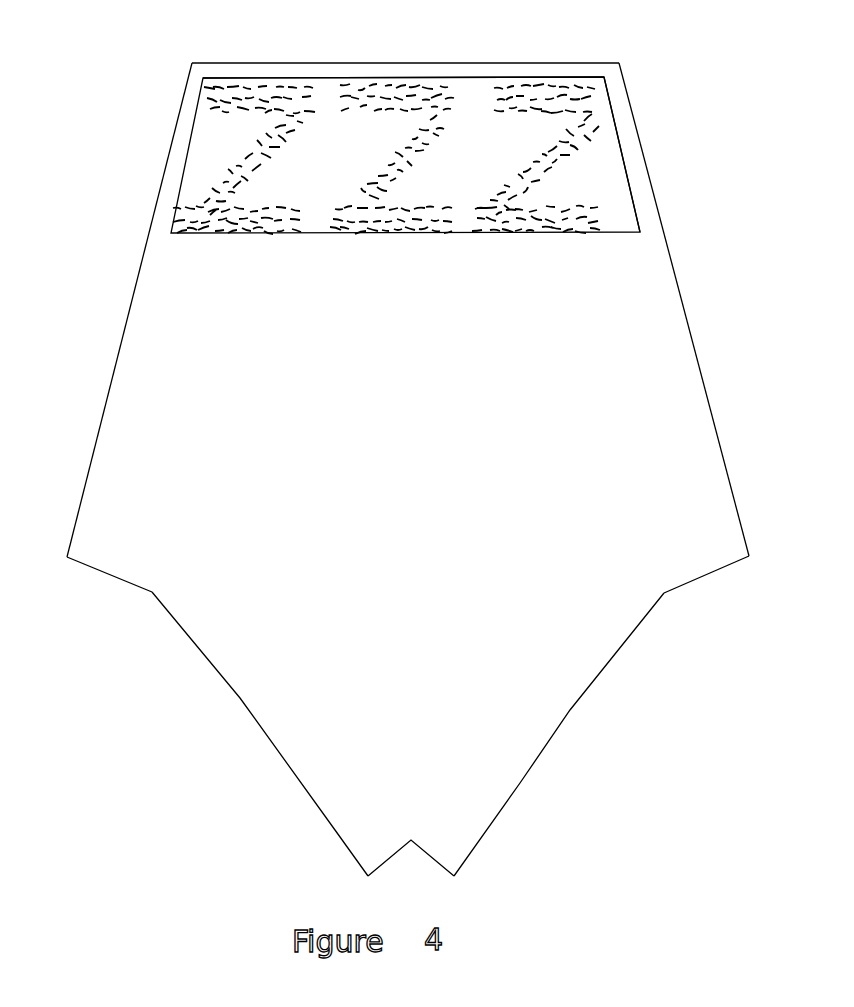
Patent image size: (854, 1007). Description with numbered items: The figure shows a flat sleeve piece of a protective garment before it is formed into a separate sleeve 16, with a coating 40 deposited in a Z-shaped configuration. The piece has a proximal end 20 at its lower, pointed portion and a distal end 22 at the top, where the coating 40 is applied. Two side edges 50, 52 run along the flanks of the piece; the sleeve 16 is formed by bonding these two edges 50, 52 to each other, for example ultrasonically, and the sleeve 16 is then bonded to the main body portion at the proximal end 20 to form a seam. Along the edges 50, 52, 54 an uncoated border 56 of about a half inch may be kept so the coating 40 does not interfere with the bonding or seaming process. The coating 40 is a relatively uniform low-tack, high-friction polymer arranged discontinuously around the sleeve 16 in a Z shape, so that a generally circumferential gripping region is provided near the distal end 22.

The sleeve 16 is at (385, 469).
The proximal end 20 is at (520, 780).
The distal end 22 is at (452, 62).
The coating 40 is at (290, 211).
The edge 50 is at (705, 388).
The edge 52 is at (102, 410).
The edge 54 is at (319, 63).
The border 56 is at (635, 161).